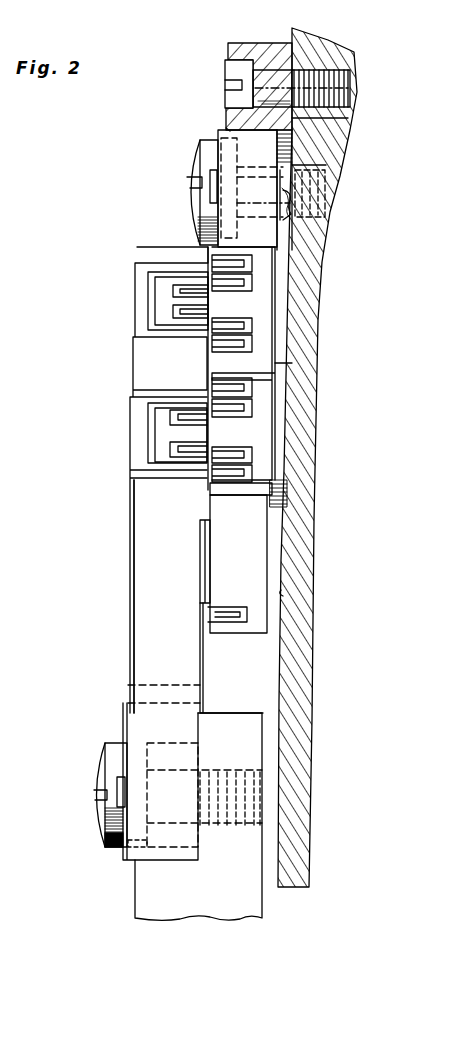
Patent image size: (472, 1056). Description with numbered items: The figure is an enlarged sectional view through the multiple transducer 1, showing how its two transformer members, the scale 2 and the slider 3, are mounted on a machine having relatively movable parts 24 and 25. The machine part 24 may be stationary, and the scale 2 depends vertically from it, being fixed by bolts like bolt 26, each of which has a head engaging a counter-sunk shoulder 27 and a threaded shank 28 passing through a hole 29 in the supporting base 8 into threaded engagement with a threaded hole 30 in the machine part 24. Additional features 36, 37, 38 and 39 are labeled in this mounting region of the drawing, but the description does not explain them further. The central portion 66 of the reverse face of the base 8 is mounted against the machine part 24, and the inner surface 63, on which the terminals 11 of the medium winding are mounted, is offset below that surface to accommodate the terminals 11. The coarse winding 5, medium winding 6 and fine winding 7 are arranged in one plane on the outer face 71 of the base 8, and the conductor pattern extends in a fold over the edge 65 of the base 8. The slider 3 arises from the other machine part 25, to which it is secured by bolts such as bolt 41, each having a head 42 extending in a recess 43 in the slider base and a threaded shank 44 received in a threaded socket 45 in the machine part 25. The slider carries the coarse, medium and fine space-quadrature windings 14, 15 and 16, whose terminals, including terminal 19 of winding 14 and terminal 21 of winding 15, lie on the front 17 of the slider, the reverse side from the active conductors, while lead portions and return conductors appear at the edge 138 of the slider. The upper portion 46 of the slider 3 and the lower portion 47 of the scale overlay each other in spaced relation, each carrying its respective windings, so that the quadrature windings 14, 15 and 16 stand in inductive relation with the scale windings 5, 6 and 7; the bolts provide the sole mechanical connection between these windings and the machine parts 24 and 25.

The multiple transducer 1 is at (171, 217).
The scale 2 is at (270, 333).
The slider 3 is at (120, 580).
The coarse winding 5 is at (204, 350).
The medium winding 6 is at (201, 388).
The fine winding 7 is at (207, 568).
The supporting base 8 is at (258, 556).
The terminals for winding 6 11 is at (283, 190).
The coarse quadrature winding 14 is at (215, 315).
The medium quadrature winding 15 is at (215, 445).
The fine quadrature winding 16 is at (209, 653).
The front of slider 17 is at (125, 668).
The terminal for quadrature winding 14 19 is at (106, 820).
The terminal for quadrature winding 15 21 is at (118, 792).
The machine part 24 is at (318, 56).
The machine part 25 is at (190, 916).
The bolt 26 is at (190, 165).
The counter-sunk shoulder 27 is at (218, 140).
The threaded shank 28 is at (326, 165).
The hole 29 is at (252, 170).
The threaded hole 30 is at (326, 207).
The screw 36 is at (225, 72).
The mounting block 37 is at (252, 45).
The joint 38 is at (226, 128).
The wall surface line 39 is at (348, 118).
The bolt 41 is at (105, 838).
The bolt head 42 is at (100, 772).
The recess 43 is at (128, 846).
The threaded shank 44 is at (218, 828).
The threaded socket 45 is at (238, 772).
The upper portion of slider 46 is at (135, 520).
The lower portion of scale 47 is at (252, 633).
The inner surface 63 is at (283, 591).
The edge of support 65 is at (250, 533).
The central portion of inner face 66 is at (290, 432).
The outer face 71 is at (200, 240).
The edge of slider 138 is at (140, 624).